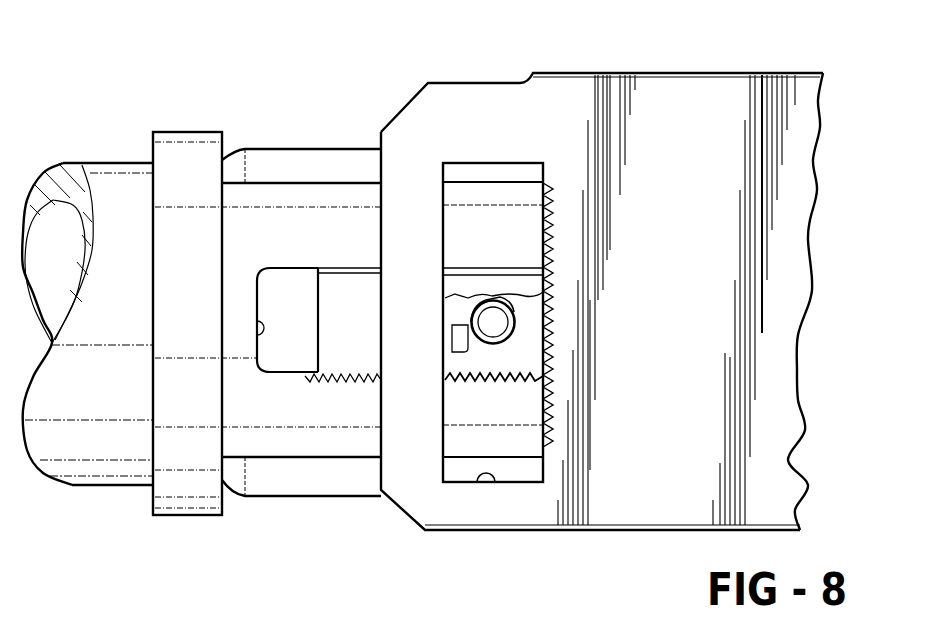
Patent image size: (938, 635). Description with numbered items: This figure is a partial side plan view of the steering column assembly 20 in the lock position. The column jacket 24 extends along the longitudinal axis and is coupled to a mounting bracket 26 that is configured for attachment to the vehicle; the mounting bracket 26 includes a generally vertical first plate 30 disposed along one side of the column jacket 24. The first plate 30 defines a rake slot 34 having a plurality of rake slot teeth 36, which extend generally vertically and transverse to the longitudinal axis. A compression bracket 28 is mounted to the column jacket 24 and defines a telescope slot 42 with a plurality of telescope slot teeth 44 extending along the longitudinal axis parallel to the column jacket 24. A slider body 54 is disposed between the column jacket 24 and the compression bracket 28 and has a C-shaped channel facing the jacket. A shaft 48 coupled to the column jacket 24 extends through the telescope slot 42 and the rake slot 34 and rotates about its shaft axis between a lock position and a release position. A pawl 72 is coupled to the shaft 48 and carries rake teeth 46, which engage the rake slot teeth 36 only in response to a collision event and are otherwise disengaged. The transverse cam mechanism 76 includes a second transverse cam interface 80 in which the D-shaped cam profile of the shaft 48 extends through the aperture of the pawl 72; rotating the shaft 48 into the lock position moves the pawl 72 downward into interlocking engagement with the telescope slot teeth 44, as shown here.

The steering column assembly 20 is at (654, 58).
The column jacket 24 is at (262, 162).
The mounting bracket 26 is at (745, 73).
The compression bracket 28 is at (185, 155).
The first plate 30 is at (788, 212).
The rake slot 34 is at (490, 467).
The rake slot teeth 36 is at (545, 222).
The telescope slot 42 is at (260, 343).
The telescope slot teeth 44 is at (350, 365).
The rake teeth 46 is at (555, 340).
The shaft 48 is at (493, 323).
The slider body 54 is at (352, 300).
The pawl 72 is at (475, 362).
The transverse cam mechanism 76 is at (478, 297).
The second transverse cam interface 80 is at (496, 297).